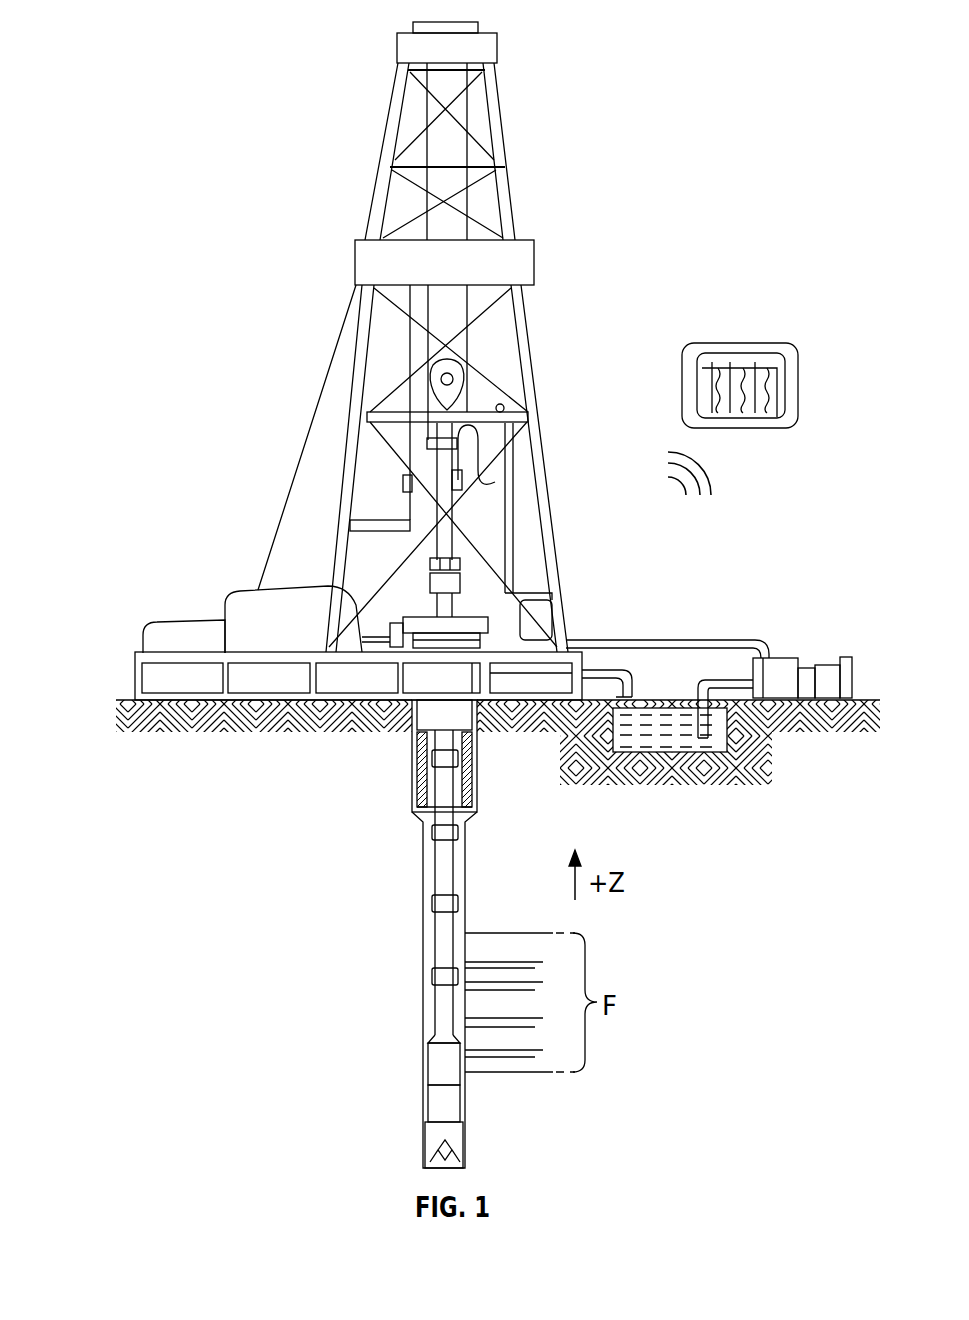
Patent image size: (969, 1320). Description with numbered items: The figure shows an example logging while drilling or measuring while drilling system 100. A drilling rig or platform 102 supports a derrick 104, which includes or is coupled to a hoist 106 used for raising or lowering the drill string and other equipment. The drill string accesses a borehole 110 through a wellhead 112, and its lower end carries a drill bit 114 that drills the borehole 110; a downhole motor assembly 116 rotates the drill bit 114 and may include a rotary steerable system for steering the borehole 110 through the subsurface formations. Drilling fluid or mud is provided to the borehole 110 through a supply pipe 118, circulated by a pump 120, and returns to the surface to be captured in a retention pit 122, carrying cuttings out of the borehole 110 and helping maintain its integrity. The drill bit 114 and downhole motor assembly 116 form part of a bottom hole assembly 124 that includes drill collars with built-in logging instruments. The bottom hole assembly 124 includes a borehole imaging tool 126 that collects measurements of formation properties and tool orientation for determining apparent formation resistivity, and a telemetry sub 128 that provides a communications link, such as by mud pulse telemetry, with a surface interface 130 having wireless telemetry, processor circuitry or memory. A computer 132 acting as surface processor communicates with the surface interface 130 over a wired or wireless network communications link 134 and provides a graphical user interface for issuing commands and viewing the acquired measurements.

The logging while drilling or measuring while drilling system 100 is at (250, 84).
The drilling rig or platform 102 is at (135, 668).
The derrick 104 is at (515, 202).
The hoist 106 is at (468, 382).
The borehole 110 is at (465, 902).
The wellhead 112 is at (490, 625).
The drill bit 114 is at (446, 1138).
The downhole motor assembly 116 is at (438, 1138).
The supply pipe 118 is at (722, 638).
The pump 120 is at (788, 657).
The retention pit 122 is at (656, 733).
The bottom hole assembly 124 is at (441, 1099).
The borehole imaging tool 126 is at (455, 1110).
The telemetry sub 128 is at (438, 1072).
The surface interface 130 is at (460, 562).
The computer 132 is at (750, 343).
The network communications link 134 is at (712, 490).